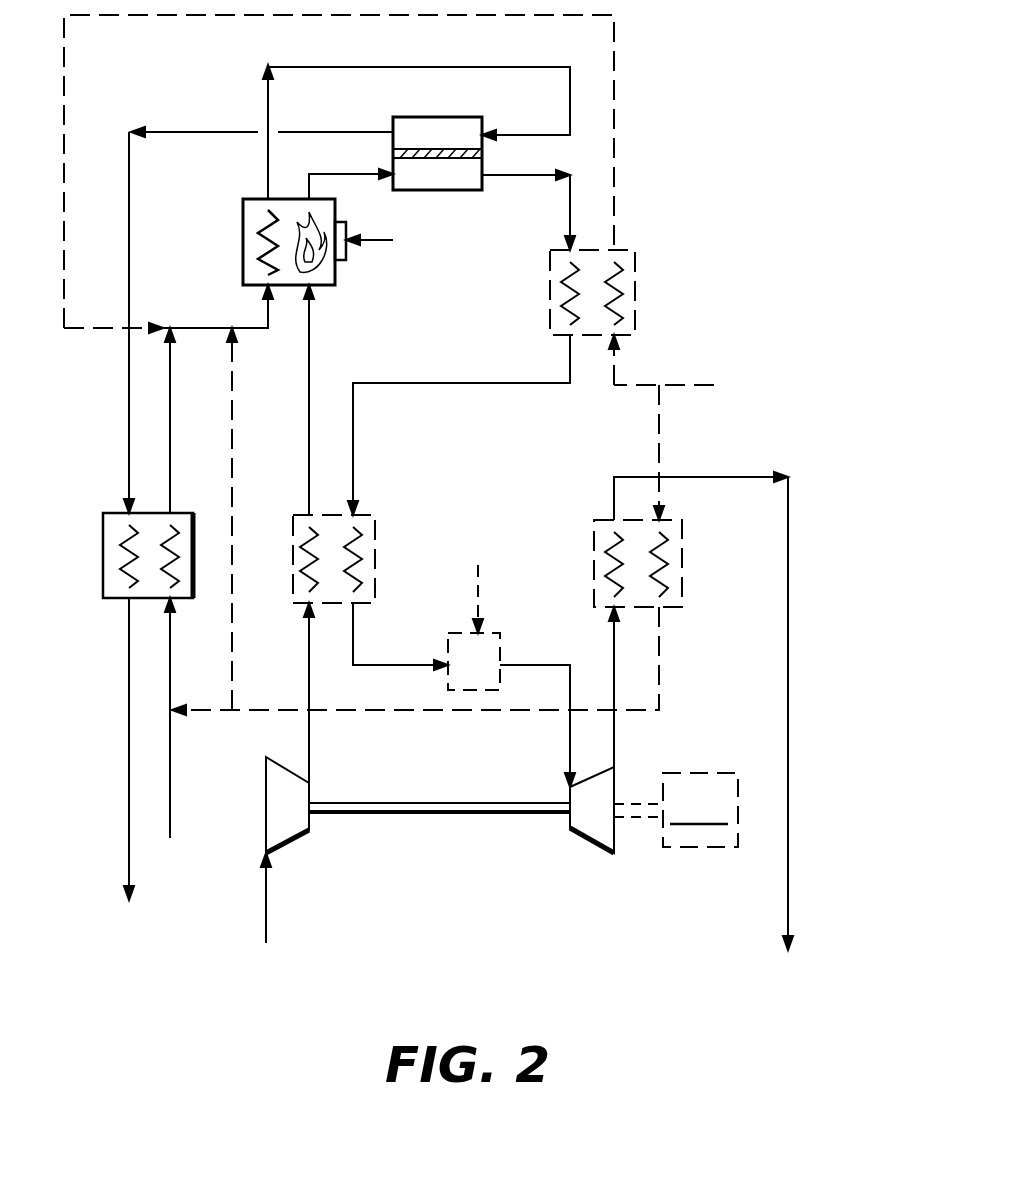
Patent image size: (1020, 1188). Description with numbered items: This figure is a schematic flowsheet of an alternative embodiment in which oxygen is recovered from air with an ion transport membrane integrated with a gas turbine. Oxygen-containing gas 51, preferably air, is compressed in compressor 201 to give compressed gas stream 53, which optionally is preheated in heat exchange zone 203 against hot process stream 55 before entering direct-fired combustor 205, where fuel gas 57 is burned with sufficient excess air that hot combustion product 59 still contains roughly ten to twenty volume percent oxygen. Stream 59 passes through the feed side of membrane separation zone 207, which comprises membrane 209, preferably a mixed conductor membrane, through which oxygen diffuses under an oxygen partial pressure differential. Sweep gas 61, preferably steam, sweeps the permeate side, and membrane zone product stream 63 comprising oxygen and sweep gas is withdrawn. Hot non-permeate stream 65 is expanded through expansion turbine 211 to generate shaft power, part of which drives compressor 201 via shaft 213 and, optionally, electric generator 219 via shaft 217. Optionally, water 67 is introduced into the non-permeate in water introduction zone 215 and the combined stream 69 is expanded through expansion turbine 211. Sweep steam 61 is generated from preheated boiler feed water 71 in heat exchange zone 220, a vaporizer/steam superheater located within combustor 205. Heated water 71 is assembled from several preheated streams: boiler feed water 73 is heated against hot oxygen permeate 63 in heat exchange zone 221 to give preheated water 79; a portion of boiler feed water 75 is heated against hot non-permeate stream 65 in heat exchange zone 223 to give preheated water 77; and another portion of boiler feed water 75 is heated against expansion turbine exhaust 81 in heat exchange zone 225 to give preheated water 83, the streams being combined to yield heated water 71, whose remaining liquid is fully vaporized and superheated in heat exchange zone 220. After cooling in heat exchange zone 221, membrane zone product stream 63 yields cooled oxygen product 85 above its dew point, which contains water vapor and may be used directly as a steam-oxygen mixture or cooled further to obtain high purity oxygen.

The oxygen-containing gas 51 is at (266, 912).
The compressed gas stream 53 is at (309, 650).
The hot process stream 55 is at (480, 385).
The fuel gas 57 is at (393, 240).
The hot combustion product 59 is at (318, 148).
The sweep gas 61 is at (572, 105).
The membrane zone product stream 63 is at (215, 131).
The hot non-permeate stream 65 is at (570, 207).
The water 67 is at (478, 565).
The combined stream 69 is at (535, 665).
The preheated boiler feed water 71 is at (268, 328).
The boiler feed water 73 is at (170, 785).
The boiler feed water 75 is at (693, 385).
The preheated water 77 is at (614, 197).
The preheated water 79 is at (170, 470).
The expansion turbine exhaust 81 is at (614, 663).
The preheated water 83 is at (659, 655).
The cooled oxygen product 85 is at (129, 773).
The compressor 201 is at (297, 840).
The heat exchange zone 203 is at (375, 545).
The direct-fired combustor 205 is at (243, 203).
The membrane separation zone 207 is at (440, 108).
The membrane 209 is at (398, 150).
The expansion turbine 211 is at (590, 842).
The shaft 213 is at (478, 801).
The water introduction zone 215 is at (448, 648).
The shaft 217 is at (663, 790).
The electric generator 219 is at (700, 810).
The heat exchange zone 220 is at (243, 245).
The heat exchange zone 221 is at (103, 525).
The heat exchange zone 223 is at (635, 285).
The heat exchange zone 225 is at (682, 575).